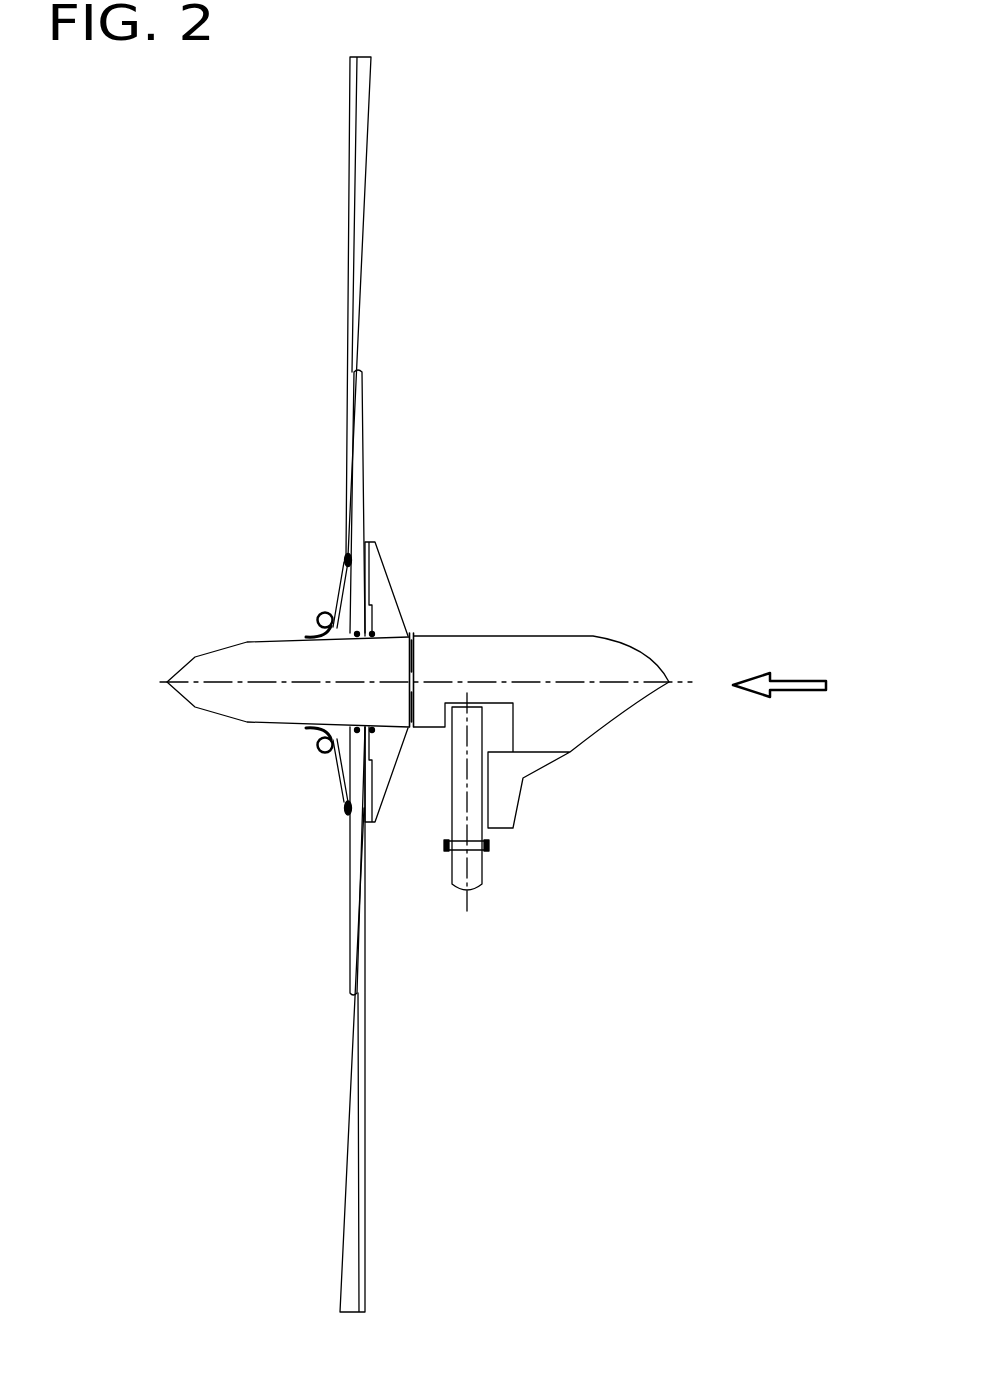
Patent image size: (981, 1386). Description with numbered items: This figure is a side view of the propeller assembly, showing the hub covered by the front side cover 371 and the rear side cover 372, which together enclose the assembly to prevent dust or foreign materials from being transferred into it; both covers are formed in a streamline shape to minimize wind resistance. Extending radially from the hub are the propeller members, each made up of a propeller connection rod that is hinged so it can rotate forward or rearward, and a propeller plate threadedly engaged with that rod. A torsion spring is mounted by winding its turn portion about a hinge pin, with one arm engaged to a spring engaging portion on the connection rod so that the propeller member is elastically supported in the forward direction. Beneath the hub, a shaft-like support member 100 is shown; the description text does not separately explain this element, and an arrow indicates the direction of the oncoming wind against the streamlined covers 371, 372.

The support shaft 100 is at (502, 879).
The front side cover 371 is at (636, 654).
The rear side cover 372 is at (195, 658).